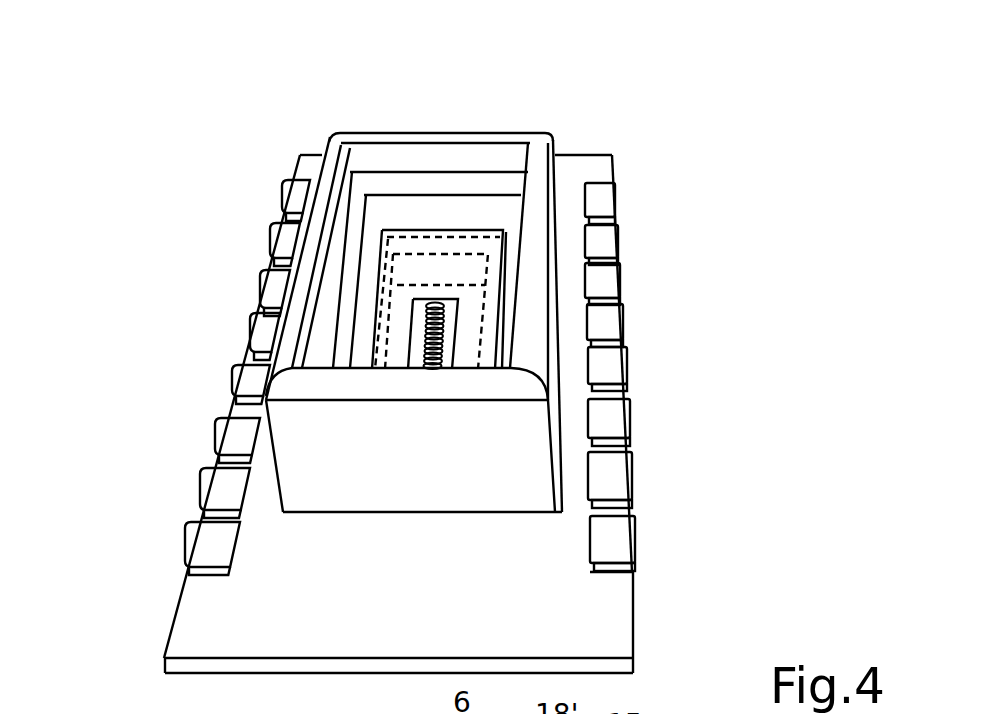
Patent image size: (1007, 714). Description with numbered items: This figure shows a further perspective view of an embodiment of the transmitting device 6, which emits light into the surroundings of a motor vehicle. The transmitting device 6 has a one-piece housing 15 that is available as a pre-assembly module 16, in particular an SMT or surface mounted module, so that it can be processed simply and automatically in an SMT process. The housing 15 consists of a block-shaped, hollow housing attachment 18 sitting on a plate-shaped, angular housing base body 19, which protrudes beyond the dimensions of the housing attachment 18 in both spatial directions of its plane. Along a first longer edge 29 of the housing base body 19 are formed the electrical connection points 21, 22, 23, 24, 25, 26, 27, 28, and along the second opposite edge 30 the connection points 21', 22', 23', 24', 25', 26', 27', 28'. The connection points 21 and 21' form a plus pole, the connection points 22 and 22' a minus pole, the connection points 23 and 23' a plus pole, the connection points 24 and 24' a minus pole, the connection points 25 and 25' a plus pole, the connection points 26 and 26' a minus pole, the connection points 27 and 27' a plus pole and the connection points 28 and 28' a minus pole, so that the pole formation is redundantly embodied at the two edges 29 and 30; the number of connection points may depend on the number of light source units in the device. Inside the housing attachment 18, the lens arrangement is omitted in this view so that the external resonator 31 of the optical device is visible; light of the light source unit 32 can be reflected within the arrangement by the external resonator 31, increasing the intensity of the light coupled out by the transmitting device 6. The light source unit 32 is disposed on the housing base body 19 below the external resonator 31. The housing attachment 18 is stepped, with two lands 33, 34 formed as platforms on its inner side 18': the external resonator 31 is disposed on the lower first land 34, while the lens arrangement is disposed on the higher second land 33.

The transmitting device 6 is at (455, 82).
The housing 15 is at (593, 87).
The pre-assembly module 16 is at (668, 637).
The housing attachment 18 is at (287, 435).
The inner side of the housing attachment 18' is at (464, 93).
The housing base body 19 is at (542, 597).
The electrical connection point 21 is at (650, 190).
The electrical connection point 22 is at (654, 230).
The electrical connection point 23 is at (657, 269).
The electrical connection point 24 is at (659, 312).
The electrical connection point 25 is at (661, 356).
The electrical connection point 26 is at (663, 410).
The electrical connection point 27 is at (661, 468).
The electrical connection point 28 is at (665, 535).
The electrical connection point 21' is at (244, 186).
The electrical connection point 22' is at (233, 231).
The electrical connection point 23' is at (223, 279).
The electrical connection point 24' is at (212, 323).
The electrical connection point 25' is at (200, 370).
The electrical connection point 26' is at (189, 427).
The electrical connection point 27' is at (175, 481).
The electrical connection point 28' is at (162, 535).
The first longer edge 29 is at (632, 628).
The second opposite edge 30 is at (172, 630).
The external resonator 31 is at (427, 230).
The light source unit 32 is at (450, 299).
The second land 33 is at (357, 187).
The first land 34 is at (380, 232).